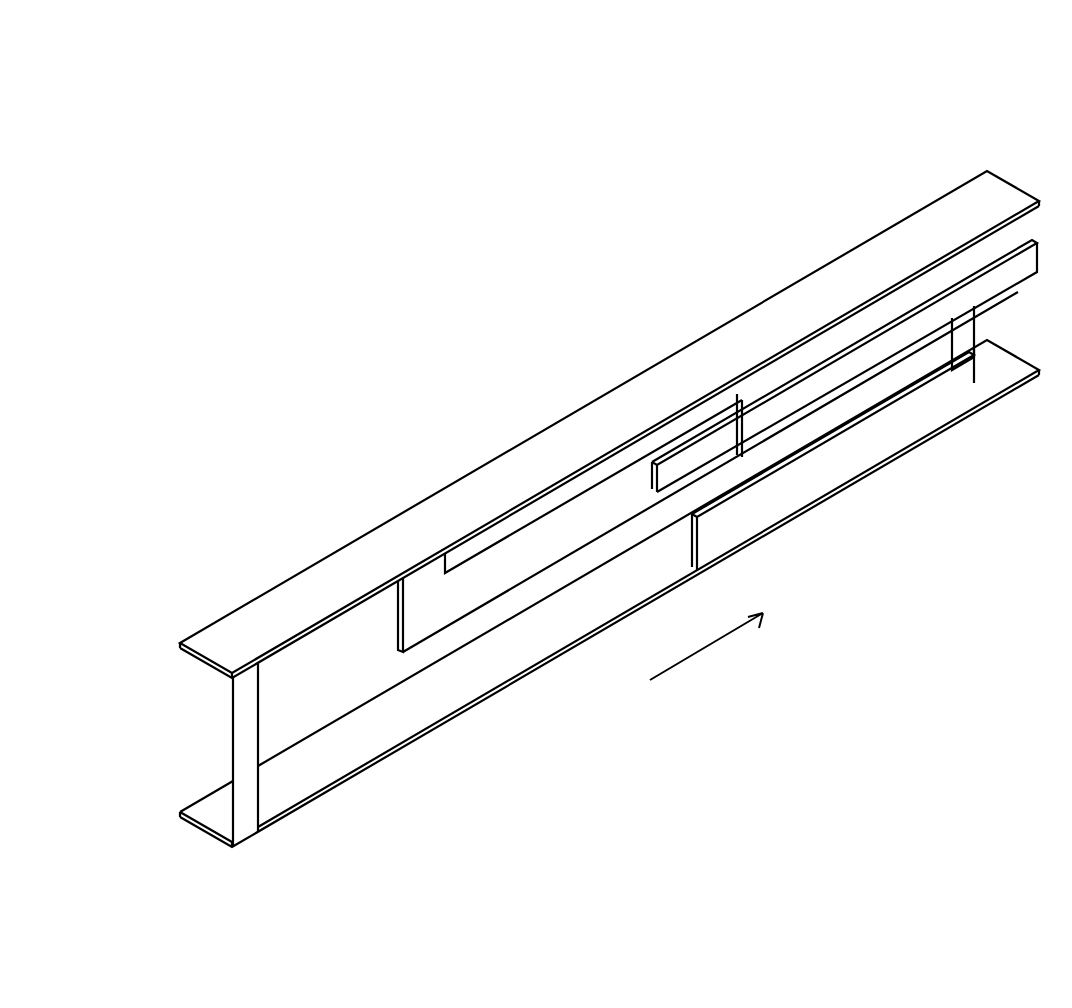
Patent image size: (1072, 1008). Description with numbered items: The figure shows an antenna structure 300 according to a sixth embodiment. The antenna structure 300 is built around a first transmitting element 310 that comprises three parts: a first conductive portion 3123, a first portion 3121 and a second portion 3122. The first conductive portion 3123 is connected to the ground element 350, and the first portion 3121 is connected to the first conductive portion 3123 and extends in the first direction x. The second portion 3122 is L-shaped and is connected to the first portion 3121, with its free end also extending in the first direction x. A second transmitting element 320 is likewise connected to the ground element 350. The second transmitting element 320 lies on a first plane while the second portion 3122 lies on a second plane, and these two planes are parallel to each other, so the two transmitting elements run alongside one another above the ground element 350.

The antenna structure 300 is at (245, 263).
The first transmitting element 310 is at (452, 322).
The first portion 3121 is at (362, 566).
The second portion 3122 is at (490, 576).
The first conductive portion 3123 is at (248, 698).
The second transmitting element 320 is at (970, 298).
The ground element 350 is at (480, 672).